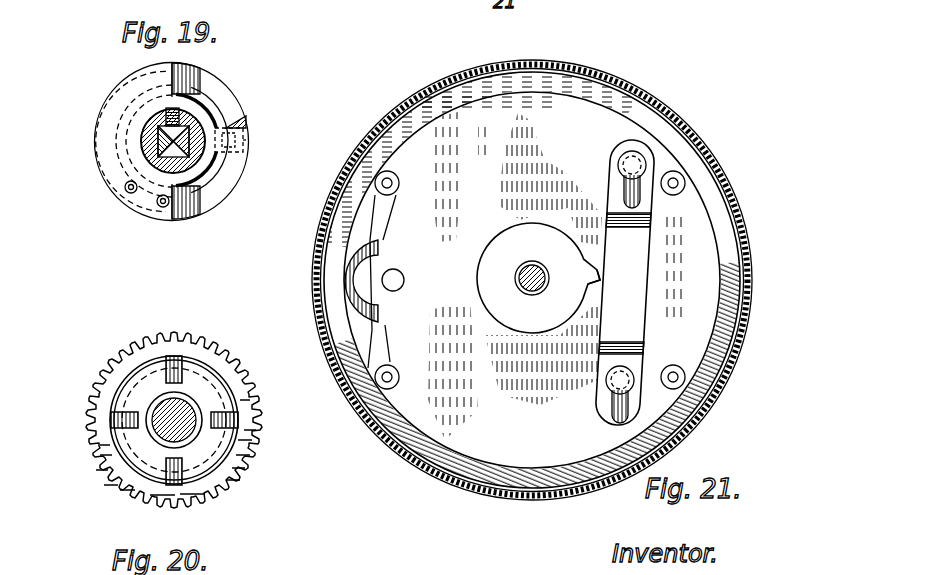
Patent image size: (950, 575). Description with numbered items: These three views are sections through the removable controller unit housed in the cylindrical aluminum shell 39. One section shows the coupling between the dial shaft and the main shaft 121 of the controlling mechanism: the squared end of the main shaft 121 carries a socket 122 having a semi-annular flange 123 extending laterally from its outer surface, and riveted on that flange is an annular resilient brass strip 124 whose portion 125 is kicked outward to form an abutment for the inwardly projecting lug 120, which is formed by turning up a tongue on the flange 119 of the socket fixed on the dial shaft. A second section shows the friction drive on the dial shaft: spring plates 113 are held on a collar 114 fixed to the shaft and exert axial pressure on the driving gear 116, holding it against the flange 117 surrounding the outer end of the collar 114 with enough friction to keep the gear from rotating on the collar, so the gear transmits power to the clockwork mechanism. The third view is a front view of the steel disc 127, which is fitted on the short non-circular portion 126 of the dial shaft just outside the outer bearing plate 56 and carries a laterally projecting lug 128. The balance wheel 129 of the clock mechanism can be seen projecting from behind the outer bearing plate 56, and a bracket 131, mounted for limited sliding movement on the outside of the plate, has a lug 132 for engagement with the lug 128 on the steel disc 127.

In FIG. 21, the cylindrical aluminum shell 39 is at (690, 150).
In FIG. 21, the outer bearing plate 56 is at (585, 115).
In FIG. 20, the spring plates 113 is at (212, 378).
In FIG. 20, the collar 114 is at (150, 417).
In FIG. 20, the driving gear 116 is at (190, 348).
In FIG. 20, the flange 117 is at (137, 375).
In FIG. 19, the flange 119 is at (181, 113).
In FIG. 19, the inwardly projecting lug 120 is at (222, 138).
In FIG. 19, the main shaft 121 is at (157, 142).
In FIG. 19, the socket 122 is at (206, 128).
In FIG. 19, the semi-annular flange 123 is at (122, 102).
In FIG. 19, the annular resilient brass strip 124 is at (238, 172).
In FIG. 19, the kicked-out portion 125 is at (238, 124).
In FIG. 21, the non-circular portion 126 is at (537, 262).
In FIG. 21, the steel disc 127 is at (520, 232).
In FIG. 21, the laterally projecting lug 128 is at (600, 264).
In FIG. 21, the balance wheel 129 is at (355, 268).
In FIG. 21, the bracket 131 is at (640, 286).
In FIG. 21, the lug 132 is at (597, 287).